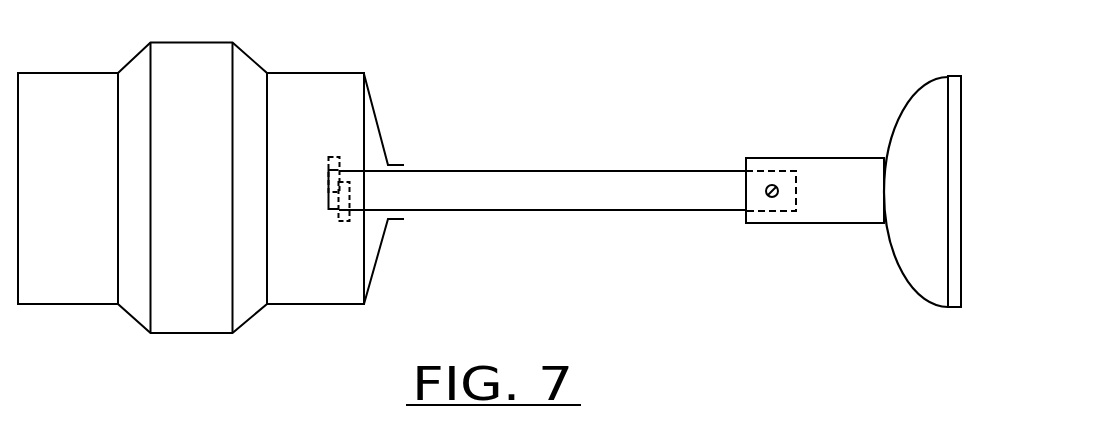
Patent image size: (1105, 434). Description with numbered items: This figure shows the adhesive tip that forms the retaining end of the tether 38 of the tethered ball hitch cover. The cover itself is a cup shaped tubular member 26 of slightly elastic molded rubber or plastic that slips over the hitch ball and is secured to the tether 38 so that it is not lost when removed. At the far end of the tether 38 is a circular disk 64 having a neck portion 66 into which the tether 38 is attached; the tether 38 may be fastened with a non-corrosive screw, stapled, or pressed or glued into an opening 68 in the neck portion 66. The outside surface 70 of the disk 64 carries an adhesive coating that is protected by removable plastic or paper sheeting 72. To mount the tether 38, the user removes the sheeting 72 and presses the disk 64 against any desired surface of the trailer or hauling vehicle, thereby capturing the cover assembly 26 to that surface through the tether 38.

The cup shaped tubular member 26 is at (221, 170).
The tether 38 is at (552, 184).
The circular disk 64 is at (932, 194).
The neck portion 66 is at (805, 141).
The opening 68 is at (733, 238).
The outside surface 70 is at (1005, 172).
The removable plastic or paper sheeting 72 is at (1029, 191).